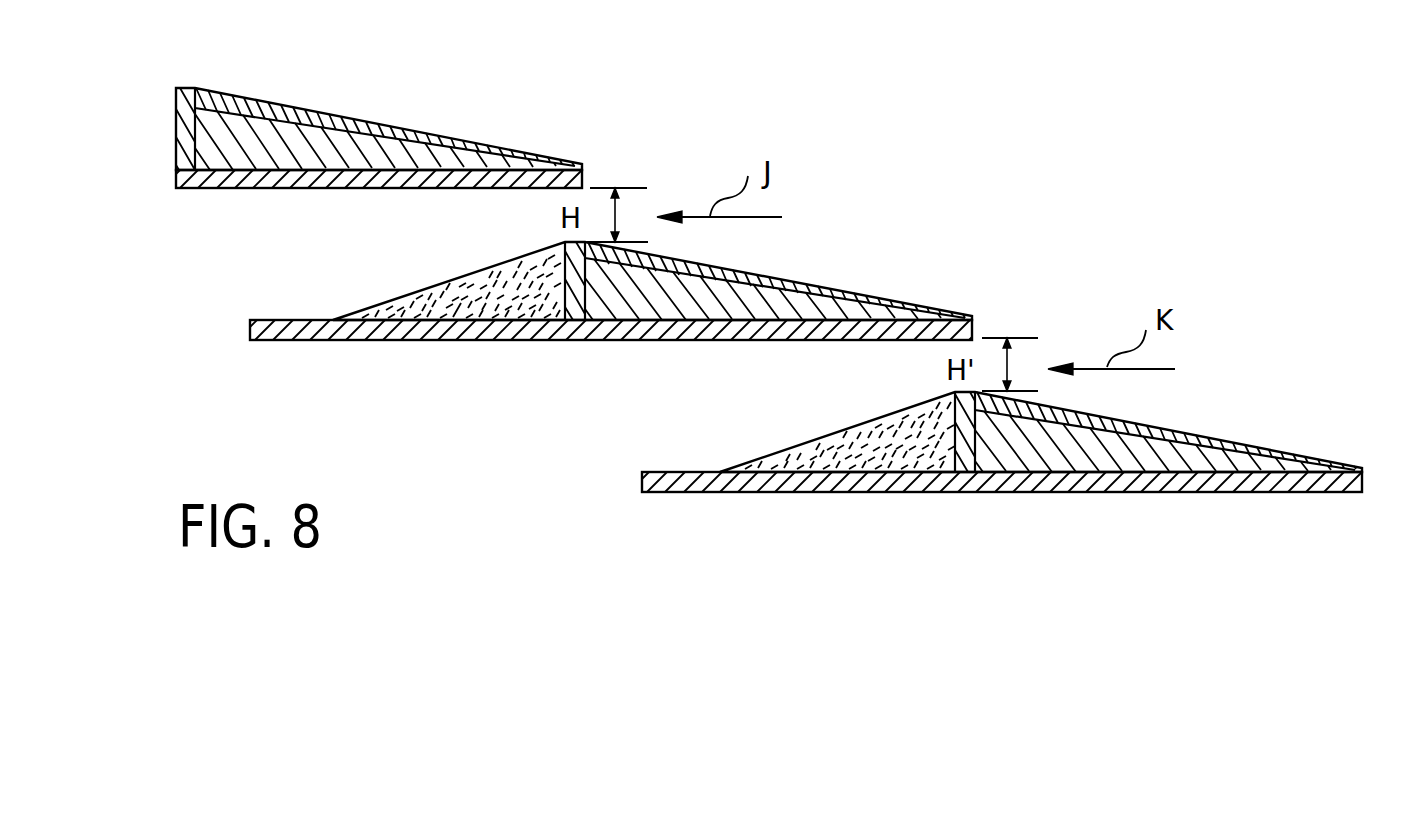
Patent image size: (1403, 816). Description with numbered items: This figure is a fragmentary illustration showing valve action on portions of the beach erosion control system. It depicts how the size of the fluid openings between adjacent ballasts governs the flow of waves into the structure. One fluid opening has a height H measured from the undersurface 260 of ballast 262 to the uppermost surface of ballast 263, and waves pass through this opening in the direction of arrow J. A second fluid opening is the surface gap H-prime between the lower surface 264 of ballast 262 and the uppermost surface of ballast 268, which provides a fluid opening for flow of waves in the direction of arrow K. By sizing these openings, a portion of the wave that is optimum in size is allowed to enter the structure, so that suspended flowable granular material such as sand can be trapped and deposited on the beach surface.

The undersurface 260 is at (316, 188).
The ballast 262 is at (337, 115).
The ballast 263 is at (827, 290).
The lower surface 264 is at (660, 341).
The ballast 268 is at (1198, 440).